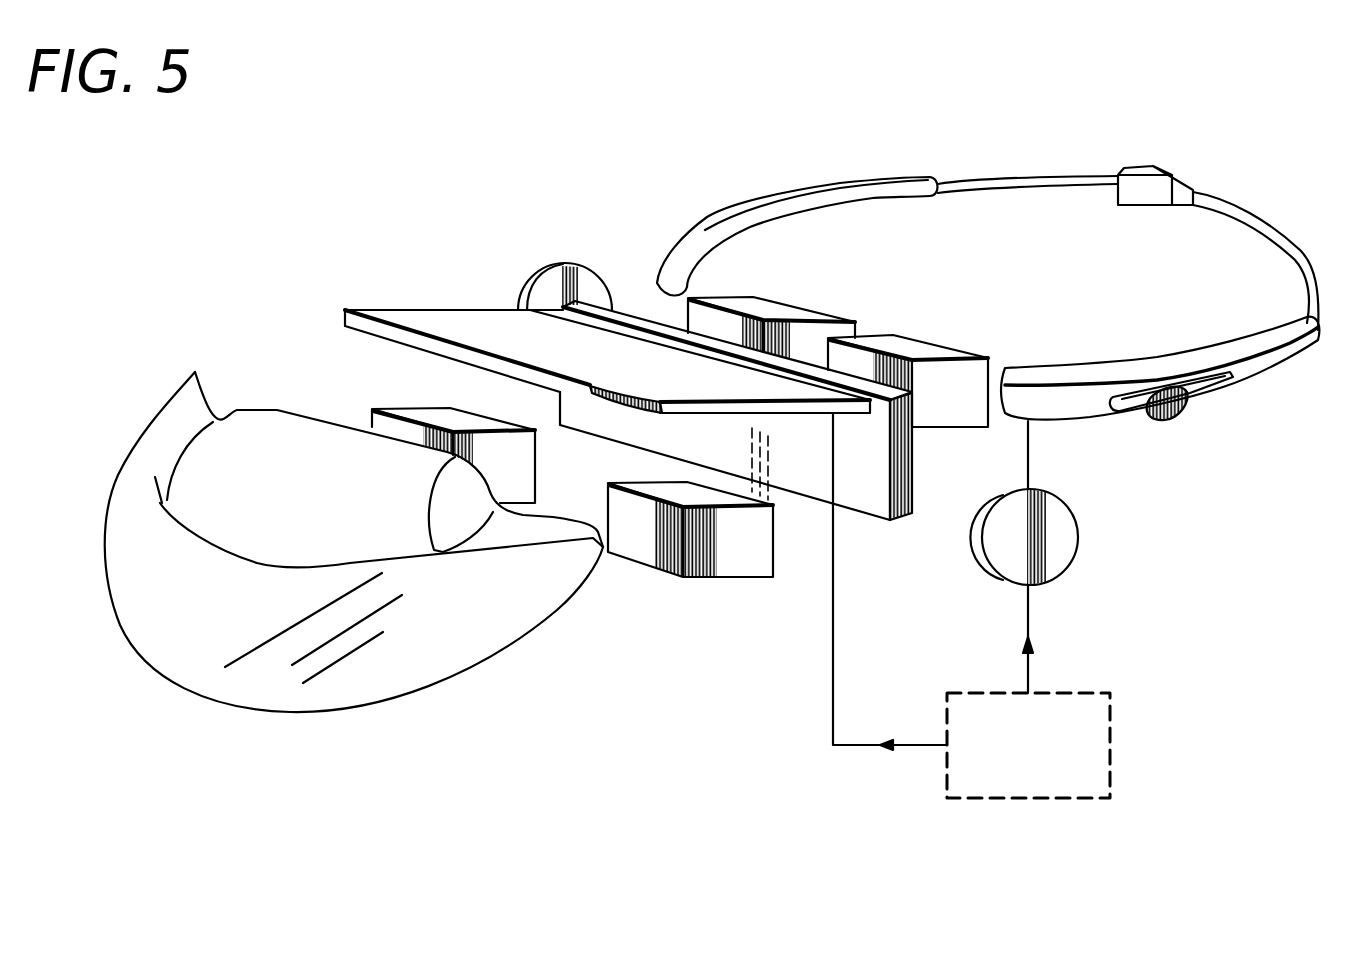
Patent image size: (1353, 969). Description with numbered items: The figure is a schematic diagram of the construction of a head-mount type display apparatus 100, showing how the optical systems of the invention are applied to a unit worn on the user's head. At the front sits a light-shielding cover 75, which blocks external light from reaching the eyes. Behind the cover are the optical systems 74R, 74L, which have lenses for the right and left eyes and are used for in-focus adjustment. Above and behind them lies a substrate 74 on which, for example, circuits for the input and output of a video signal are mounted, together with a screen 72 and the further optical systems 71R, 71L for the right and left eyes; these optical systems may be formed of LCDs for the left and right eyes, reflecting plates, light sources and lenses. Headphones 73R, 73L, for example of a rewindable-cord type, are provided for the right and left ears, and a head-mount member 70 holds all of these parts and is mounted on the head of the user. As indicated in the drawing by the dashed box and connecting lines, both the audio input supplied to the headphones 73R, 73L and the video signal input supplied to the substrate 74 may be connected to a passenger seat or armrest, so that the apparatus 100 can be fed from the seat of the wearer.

The head-mount type display apparatus 100 is at (342, 185).
The head-mount member 70 is at (1193, 393).
The optical system 71R is at (763, 296).
The optical system 71L is at (892, 336).
The screen 72 is at (918, 472).
The headphone 73R is at (565, 278).
The headphone 73L is at (1047, 587).
The substrate 74 is at (365, 299).
The optical system 74R is at (373, 408).
The optical system 74L is at (758, 578).
The light-shielding cover 75 is at (200, 385).